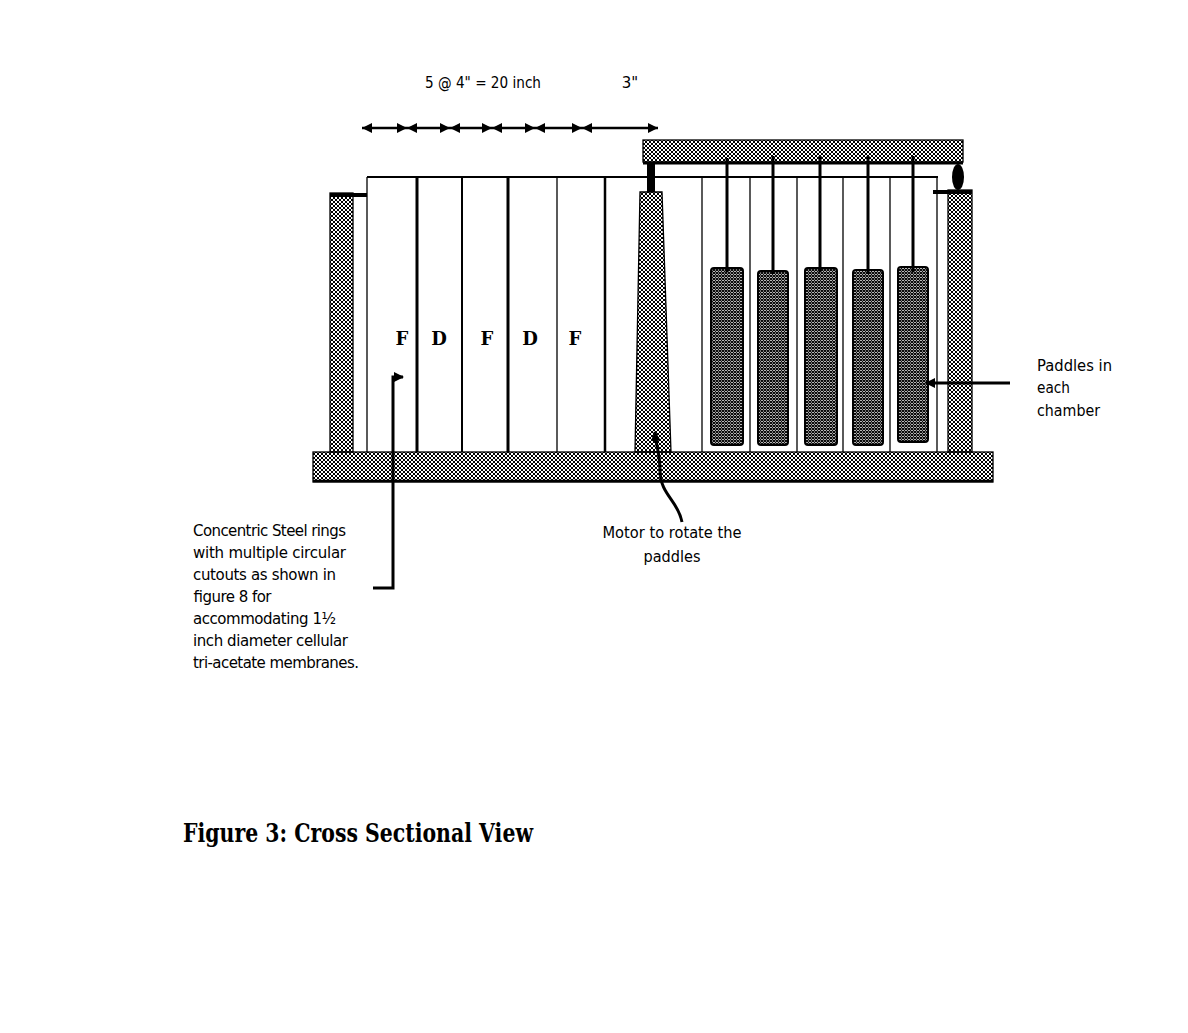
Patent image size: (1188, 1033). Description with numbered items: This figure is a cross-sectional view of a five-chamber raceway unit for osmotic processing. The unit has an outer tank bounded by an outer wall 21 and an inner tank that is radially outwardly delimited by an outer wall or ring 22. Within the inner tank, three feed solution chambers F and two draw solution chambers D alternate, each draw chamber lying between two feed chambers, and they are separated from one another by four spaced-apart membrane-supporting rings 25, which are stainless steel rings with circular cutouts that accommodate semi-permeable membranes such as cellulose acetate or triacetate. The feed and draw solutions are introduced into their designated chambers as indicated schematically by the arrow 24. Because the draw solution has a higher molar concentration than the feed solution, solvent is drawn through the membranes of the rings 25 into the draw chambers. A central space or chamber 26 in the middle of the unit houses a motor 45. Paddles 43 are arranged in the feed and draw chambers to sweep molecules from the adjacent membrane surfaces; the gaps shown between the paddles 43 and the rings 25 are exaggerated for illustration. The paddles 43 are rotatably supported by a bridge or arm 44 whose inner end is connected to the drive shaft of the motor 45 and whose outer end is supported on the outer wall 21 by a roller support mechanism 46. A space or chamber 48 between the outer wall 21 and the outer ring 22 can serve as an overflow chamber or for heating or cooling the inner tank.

The outer wall 21 is at (330, 253).
The outer ring 22 is at (373, 328).
The arrow 24 is at (398, 482).
The membrane-supporting ring 25 is at (888, 308).
The central space 26 is at (631, 187).
The paddle 43 is at (968, 401).
The bridge or arm 44 is at (855, 140).
The motor 45 is at (653, 375).
The roller support mechanism 46 is at (967, 175).
The space or chamber 48 is at (943, 275).